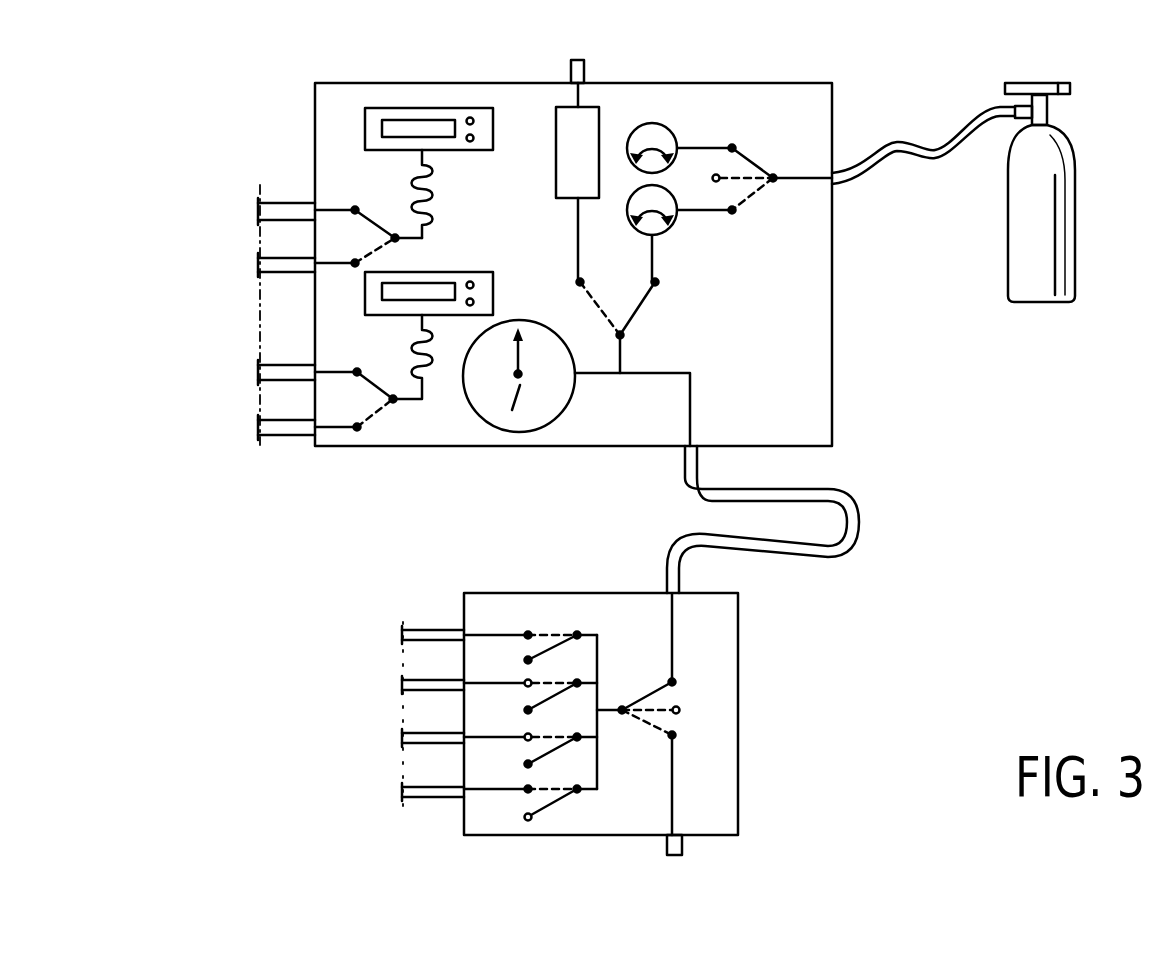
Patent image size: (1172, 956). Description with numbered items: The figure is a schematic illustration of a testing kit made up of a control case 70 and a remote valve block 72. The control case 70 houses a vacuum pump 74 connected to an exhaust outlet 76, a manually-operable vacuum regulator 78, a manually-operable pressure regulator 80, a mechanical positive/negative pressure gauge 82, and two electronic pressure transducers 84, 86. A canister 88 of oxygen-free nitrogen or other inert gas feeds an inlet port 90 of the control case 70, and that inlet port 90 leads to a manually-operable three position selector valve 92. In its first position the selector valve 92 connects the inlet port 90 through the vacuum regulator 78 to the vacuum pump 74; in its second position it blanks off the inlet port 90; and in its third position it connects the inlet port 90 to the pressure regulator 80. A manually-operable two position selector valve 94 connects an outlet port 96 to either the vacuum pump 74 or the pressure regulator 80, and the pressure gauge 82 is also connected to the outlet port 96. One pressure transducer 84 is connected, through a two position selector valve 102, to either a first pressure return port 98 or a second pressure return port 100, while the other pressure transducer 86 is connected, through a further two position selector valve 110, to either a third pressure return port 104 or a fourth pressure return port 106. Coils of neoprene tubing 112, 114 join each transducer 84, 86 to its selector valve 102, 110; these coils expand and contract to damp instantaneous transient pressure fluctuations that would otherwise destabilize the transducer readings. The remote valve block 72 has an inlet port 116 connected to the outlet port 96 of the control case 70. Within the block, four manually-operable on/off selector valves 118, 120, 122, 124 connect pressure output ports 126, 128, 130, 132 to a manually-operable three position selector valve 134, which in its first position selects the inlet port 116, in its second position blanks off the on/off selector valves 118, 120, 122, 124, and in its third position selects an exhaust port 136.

The control case 70 is at (815, 383).
The remote valve block 72 is at (725, 775).
The vacuum pump 74 is at (556, 161).
The exhaust outlet 76 is at (585, 70).
The vacuum regulator 78 is at (670, 129).
The pressure regulator 80 is at (672, 231).
The positive/negative pressure gauge 82 is at (577, 400).
The pressure transducer 84 is at (367, 289).
The pressure transducer 86 is at (370, 115).
The canister 88 is at (1060, 240).
The inlet port 90 is at (834, 182).
The three position selector valve 92 is at (752, 165).
The two position selector valve 94 is at (643, 306).
The outlet port 96 is at (683, 450).
The first pressure return port 98 is at (260, 425).
The second pressure return port 100 is at (260, 370).
The two position selector valve 102 is at (378, 403).
The third pressure return port 104 is at (260, 262).
The fourth pressure return port 106 is at (294, 210).
The two position selector valve 110 is at (368, 210).
The coil of neoprene tubing 112 is at (430, 200).
The coil of neoprene tubing 114 is at (415, 351).
The inlet port 116 is at (662, 592).
The on/off selector valve 118 is at (545, 795).
The on/off selector valve 120 is at (543, 740).
The on/off selector valve 122 is at (558, 682).
The on/off selector valve 124 is at (540, 632).
The pressure output port 126 is at (406, 790).
The pressure output port 128 is at (406, 736).
The pressure output port 130 is at (406, 682).
The pressure output port 132 is at (437, 630).
The three position selector valve 134 is at (660, 690).
The exhaust port 136 is at (665, 845).